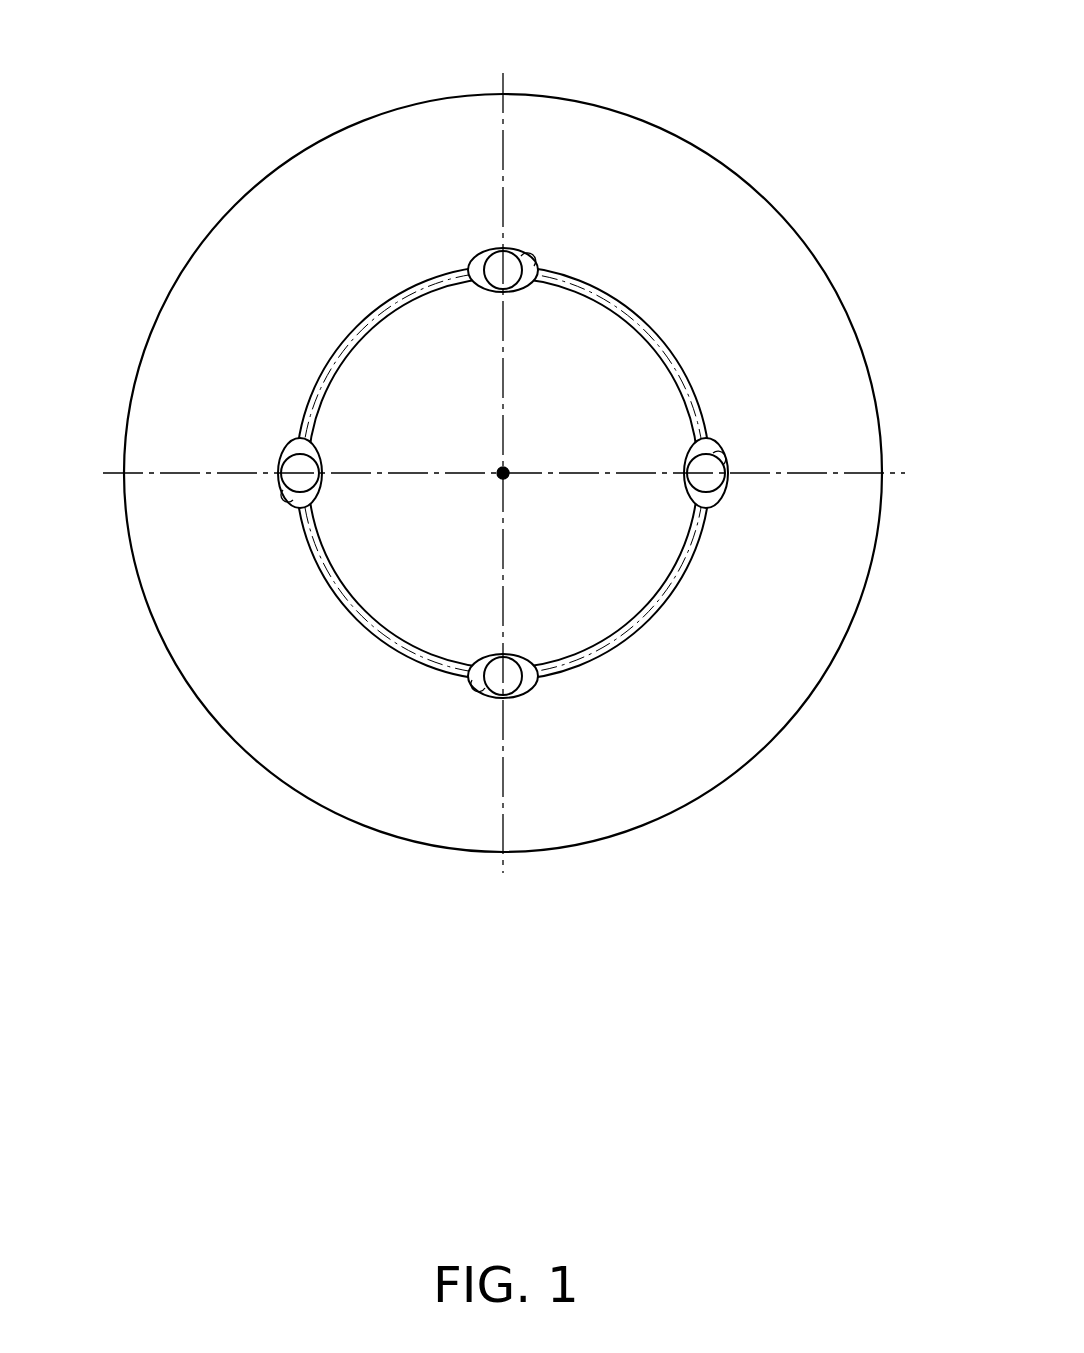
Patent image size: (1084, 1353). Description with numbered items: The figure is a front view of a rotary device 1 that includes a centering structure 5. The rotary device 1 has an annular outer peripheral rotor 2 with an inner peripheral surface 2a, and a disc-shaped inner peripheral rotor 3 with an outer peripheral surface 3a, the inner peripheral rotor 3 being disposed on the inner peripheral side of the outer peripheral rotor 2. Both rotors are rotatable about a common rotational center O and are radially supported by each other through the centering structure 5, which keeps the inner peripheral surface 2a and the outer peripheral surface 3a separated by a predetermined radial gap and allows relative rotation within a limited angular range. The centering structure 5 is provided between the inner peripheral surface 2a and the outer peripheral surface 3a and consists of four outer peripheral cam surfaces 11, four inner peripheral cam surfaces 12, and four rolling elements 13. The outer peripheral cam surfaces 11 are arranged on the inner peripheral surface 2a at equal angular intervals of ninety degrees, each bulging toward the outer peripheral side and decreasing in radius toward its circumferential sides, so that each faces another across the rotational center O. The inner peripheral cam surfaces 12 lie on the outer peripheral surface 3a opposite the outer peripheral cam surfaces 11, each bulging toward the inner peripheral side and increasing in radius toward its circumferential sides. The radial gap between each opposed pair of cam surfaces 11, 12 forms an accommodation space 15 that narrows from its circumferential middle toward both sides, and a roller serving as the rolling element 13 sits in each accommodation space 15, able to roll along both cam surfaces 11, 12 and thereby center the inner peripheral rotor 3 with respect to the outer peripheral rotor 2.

The rotary device 1 is at (243, 115).
The outer peripheral rotor 2 is at (581, 117).
The inner peripheral surface 2a is at (605, 293).
The inner peripheral rotor 3 is at (633, 598).
The outer peripheral surface 3a is at (605, 657).
The centering structure 5 is at (712, 440).
The outer peripheral cam surface 11 is at (527, 262).
The inner peripheral cam surface 12 is at (470, 264).
The rolling element 13 is at (495, 262).
The accommodation space 15 is at (488, 290).